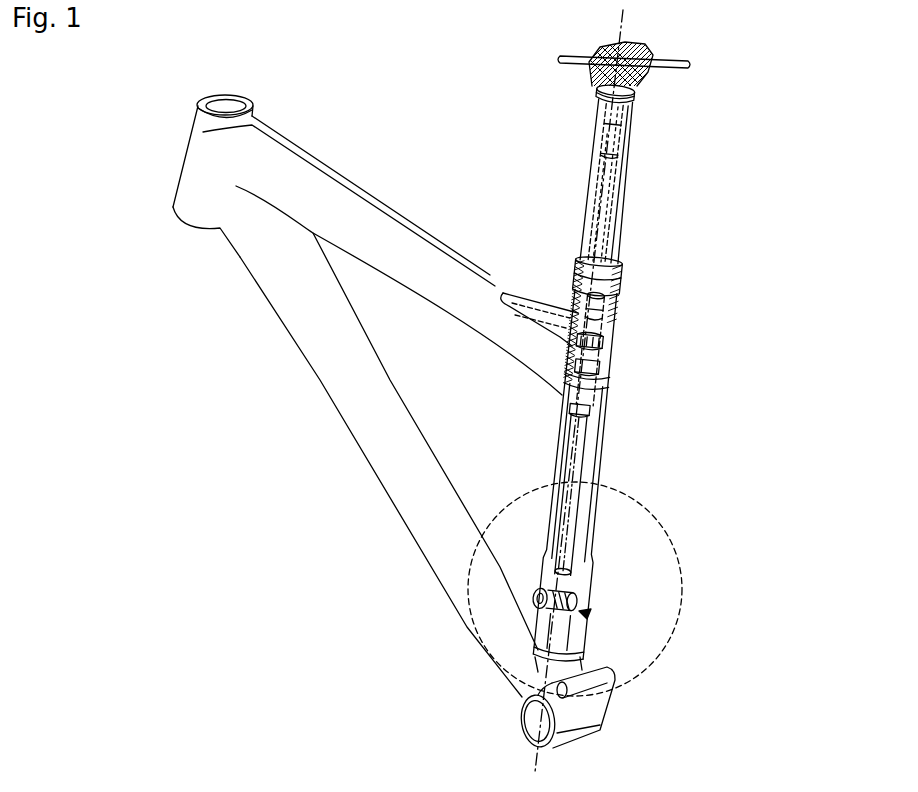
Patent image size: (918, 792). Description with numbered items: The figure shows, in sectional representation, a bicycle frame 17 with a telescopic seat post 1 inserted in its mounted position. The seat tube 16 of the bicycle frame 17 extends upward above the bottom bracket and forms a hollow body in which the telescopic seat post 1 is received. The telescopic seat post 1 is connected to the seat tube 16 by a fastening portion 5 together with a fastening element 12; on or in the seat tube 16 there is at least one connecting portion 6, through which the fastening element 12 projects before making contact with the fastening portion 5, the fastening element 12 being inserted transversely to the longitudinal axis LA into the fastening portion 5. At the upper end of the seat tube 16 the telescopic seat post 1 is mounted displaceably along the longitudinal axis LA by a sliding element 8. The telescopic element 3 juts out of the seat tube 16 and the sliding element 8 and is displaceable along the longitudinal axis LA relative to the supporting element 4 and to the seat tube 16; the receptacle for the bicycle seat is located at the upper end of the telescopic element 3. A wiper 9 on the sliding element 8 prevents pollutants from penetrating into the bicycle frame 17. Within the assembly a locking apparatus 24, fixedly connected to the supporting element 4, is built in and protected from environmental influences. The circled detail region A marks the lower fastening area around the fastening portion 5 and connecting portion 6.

The telescopic seat post 1 is at (720, 192).
The telescopic element 3 is at (628, 122).
The supporting element 4 is at (582, 458).
The fastening portion 5 is at (590, 614).
The connecting portion 6 is at (577, 596).
The sliding element 8 is at (610, 285).
The wiper 9 is at (578, 264).
The fastening element 12 is at (540, 597).
The seat tube 16 is at (538, 662).
The bicycle frame 17 is at (360, 403).
The locking apparatus 24 is at (600, 352).
The detail region A is at (682, 581).
The longitudinal axis LA is at (623, 34).